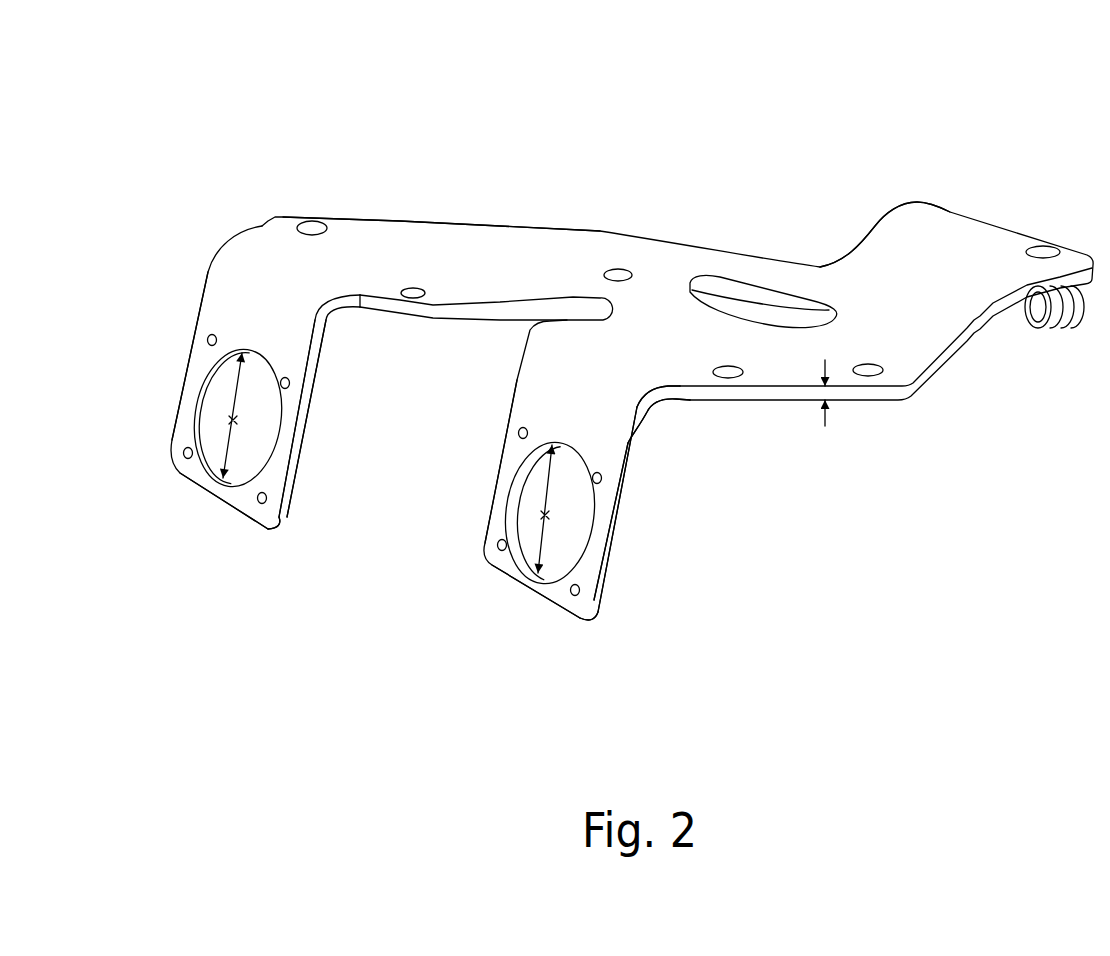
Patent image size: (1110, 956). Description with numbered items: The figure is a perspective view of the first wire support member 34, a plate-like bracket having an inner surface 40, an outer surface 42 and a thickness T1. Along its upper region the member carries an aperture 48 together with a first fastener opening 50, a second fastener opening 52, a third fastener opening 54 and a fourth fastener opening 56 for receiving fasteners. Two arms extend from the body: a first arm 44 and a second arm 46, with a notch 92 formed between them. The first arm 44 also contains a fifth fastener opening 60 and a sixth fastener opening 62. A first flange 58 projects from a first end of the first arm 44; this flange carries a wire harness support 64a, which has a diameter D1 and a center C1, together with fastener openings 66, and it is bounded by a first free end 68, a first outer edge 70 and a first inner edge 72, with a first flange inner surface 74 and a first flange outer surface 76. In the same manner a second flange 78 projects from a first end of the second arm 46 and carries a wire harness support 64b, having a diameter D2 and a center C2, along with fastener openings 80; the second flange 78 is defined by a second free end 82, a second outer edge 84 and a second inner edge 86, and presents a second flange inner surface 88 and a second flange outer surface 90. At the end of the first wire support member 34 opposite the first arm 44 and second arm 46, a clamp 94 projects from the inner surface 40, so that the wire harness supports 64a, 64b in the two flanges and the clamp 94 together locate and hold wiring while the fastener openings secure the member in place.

The first wire support member 34 is at (285, 112).
The inner surface 40 is at (790, 400).
The outer surface 42 is at (890, 258).
The first arm 44 is at (418, 252).
The second arm 46 is at (657, 393).
The aperture 48 is at (750, 288).
The first fastener opening 50 is at (875, 378).
The second fastener opening 52 is at (733, 378).
The third fastener opening 54 is at (616, 270).
The fourth fastener opening 56 is at (1040, 248).
The first flange 58 is at (198, 310).
The fifth fastener opening 60 is at (418, 303).
The sixth fastener opening 62 is at (315, 225).
The wire harness support 64a is at (200, 398).
The wire harness support 64b is at (515, 492).
The fastener openings 66 is at (303, 424).
The first free end 68 is at (247, 513).
The first outer edge 70 is at (193, 340).
The first inner edge 72 is at (310, 385).
The first flange inner surface 74 is at (293, 503).
The first flange outer surface 76 is at (193, 470).
The second flange 78 is at (504, 393).
The fastener openings 80 is at (570, 594).
The second free end 82 is at (567, 615).
The second outer edge 84 is at (612, 537).
The second inner edge 86 is at (504, 431).
The second flange inner surface 88 is at (622, 518).
The second flange outer surface 90 is at (590, 572).
The notch 92 is at (526, 297).
The clamp 94 is at (1070, 317).
The center C1 is at (239, 418).
The center C2 is at (550, 513).
The diameter D1 is at (233, 422).
The diameter D2 is at (545, 515).
The thickness T1 is at (827, 393).